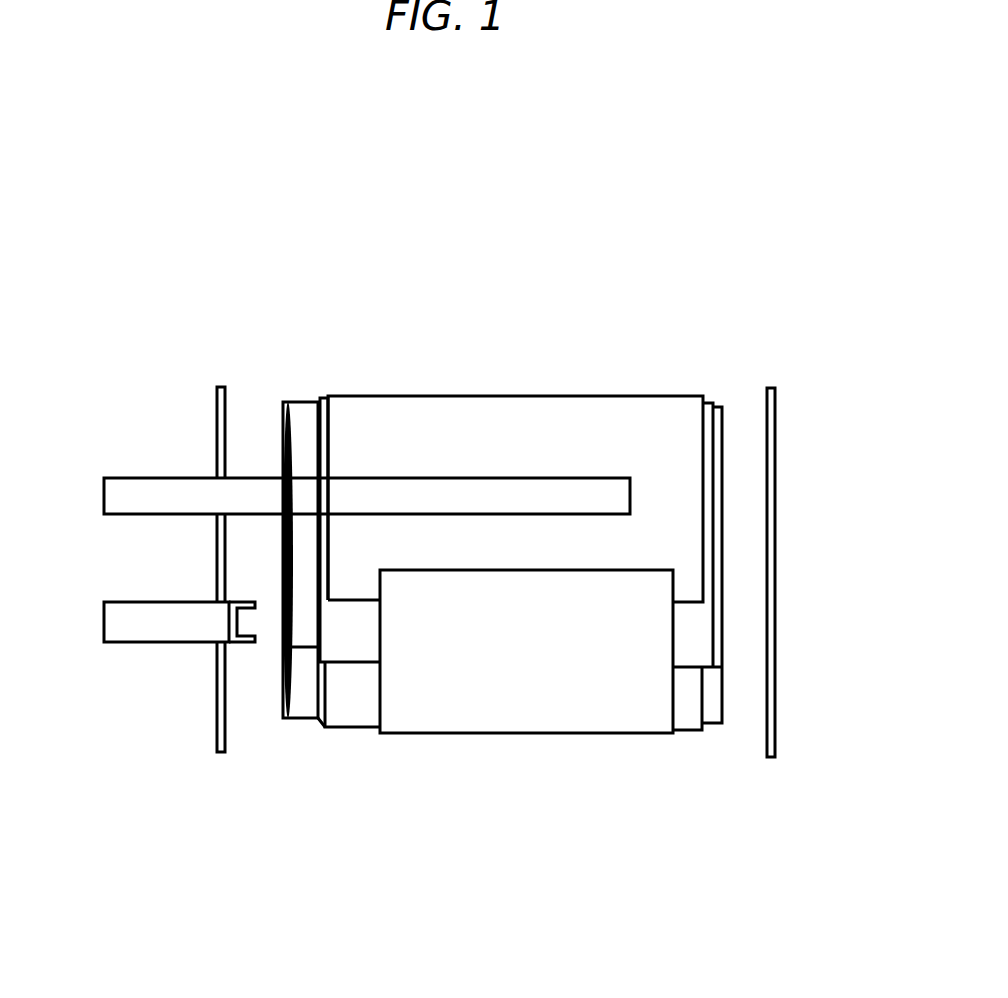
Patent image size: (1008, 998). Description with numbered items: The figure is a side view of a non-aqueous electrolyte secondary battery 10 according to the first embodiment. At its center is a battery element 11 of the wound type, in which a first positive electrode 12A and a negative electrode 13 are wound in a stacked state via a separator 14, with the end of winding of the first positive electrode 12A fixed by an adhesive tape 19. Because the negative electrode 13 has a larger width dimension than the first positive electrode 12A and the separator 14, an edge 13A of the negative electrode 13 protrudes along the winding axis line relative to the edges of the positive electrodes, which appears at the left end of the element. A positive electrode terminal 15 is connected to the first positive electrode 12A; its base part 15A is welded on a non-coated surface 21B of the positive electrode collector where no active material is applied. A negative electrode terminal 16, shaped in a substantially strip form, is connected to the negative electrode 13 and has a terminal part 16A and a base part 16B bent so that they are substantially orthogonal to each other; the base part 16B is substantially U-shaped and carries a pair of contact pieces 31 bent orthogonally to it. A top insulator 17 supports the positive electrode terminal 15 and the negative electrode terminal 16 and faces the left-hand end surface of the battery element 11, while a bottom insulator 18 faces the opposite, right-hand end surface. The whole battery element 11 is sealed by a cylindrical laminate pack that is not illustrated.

The non-aqueous electrolyte secondary battery 10 is at (585, 303).
The battery element 11 is at (451, 377).
The first positive electrode 12A is at (370, 405).
The negative electrode 13 is at (295, 730).
The edge of the negative electrode 13A is at (303, 400).
The separator 14 is at (358, 725).
The positive electrode terminal 15 is at (160, 487).
The base part 15A is at (513, 490).
The negative electrode terminal 16 is at (162, 778).
The terminal part 16A is at (125, 632).
The base part 16B is at (228, 625).
The top insulator 17 is at (220, 425).
The bottom insulator 18 is at (776, 590).
The adhesive tape 19 is at (530, 730).
The non-coated surface 21B is at (660, 432).
The contact pieces 31 is at (232, 597).